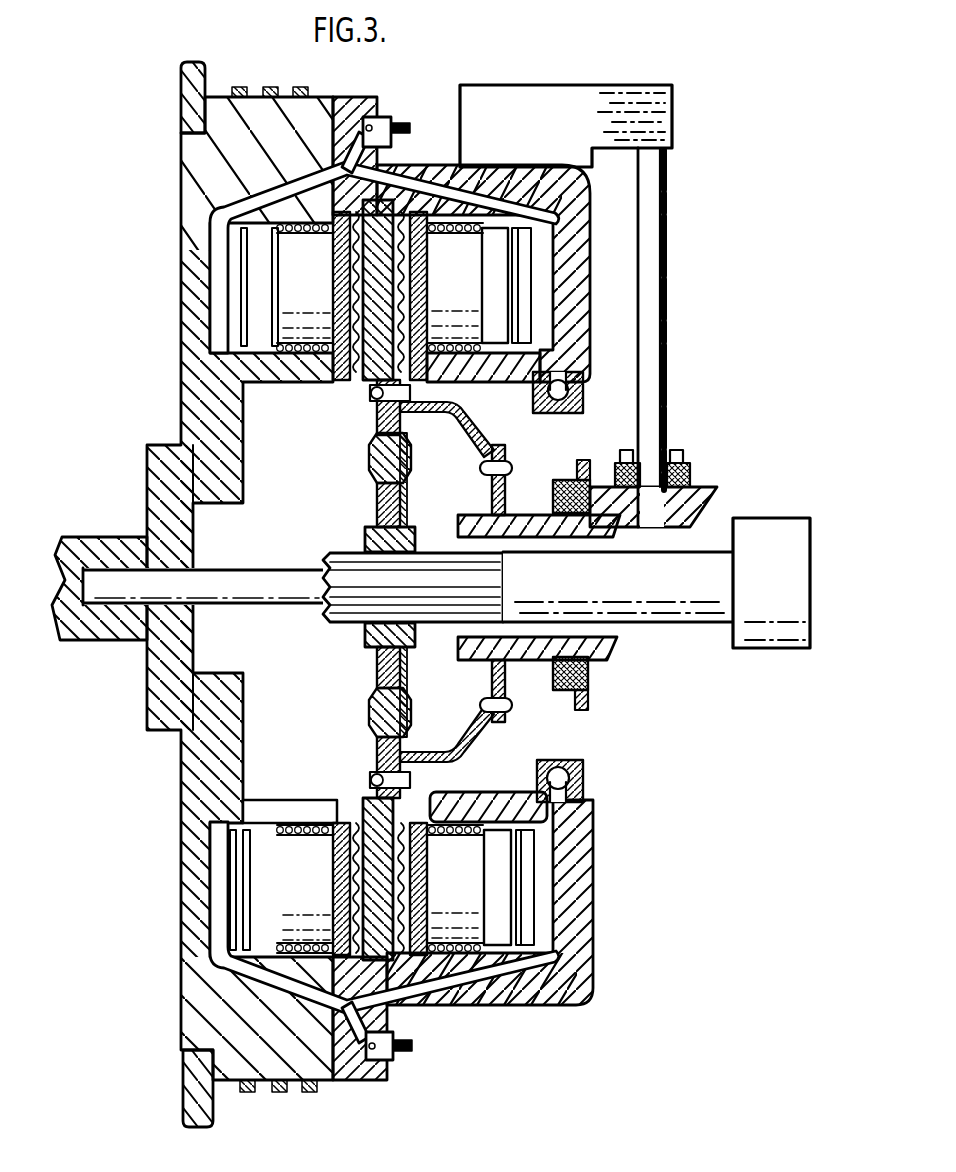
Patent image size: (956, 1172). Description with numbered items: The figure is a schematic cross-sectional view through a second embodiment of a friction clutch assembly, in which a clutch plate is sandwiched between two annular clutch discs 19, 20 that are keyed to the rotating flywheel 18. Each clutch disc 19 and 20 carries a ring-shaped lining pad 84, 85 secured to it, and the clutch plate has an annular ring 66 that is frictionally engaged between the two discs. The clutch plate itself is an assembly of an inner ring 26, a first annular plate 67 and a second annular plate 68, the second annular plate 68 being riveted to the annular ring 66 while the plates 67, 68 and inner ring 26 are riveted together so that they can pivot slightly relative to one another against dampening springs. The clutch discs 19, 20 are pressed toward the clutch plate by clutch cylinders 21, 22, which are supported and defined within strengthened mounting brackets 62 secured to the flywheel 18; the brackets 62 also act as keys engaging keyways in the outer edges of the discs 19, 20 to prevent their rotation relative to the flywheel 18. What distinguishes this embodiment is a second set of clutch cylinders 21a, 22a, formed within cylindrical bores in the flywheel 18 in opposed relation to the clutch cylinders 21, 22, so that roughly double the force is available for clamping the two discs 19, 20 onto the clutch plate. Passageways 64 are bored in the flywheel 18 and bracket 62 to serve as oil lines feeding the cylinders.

The flywheel 18 is at (203, 1013).
The clutch disc 19 is at (367, 197).
The clutch disc 20 is at (460, 170).
The clutch cylinder 21 is at (467, 283).
The clutch cylinder 21a is at (290, 325).
The clutch cylinder 22 is at (457, 885).
The clutch cylinder 22a is at (307, 853).
The inner ring 26 is at (367, 530).
The mounting bracket 62 is at (524, 993).
The passageway 64 is at (298, 988).
The annular ring 66 is at (373, 370).
The first annular plate 67 is at (405, 499).
The second annular plate 68 is at (375, 497).
The lining pad 84 is at (353, 355).
The lining pad 85 is at (474, 405).